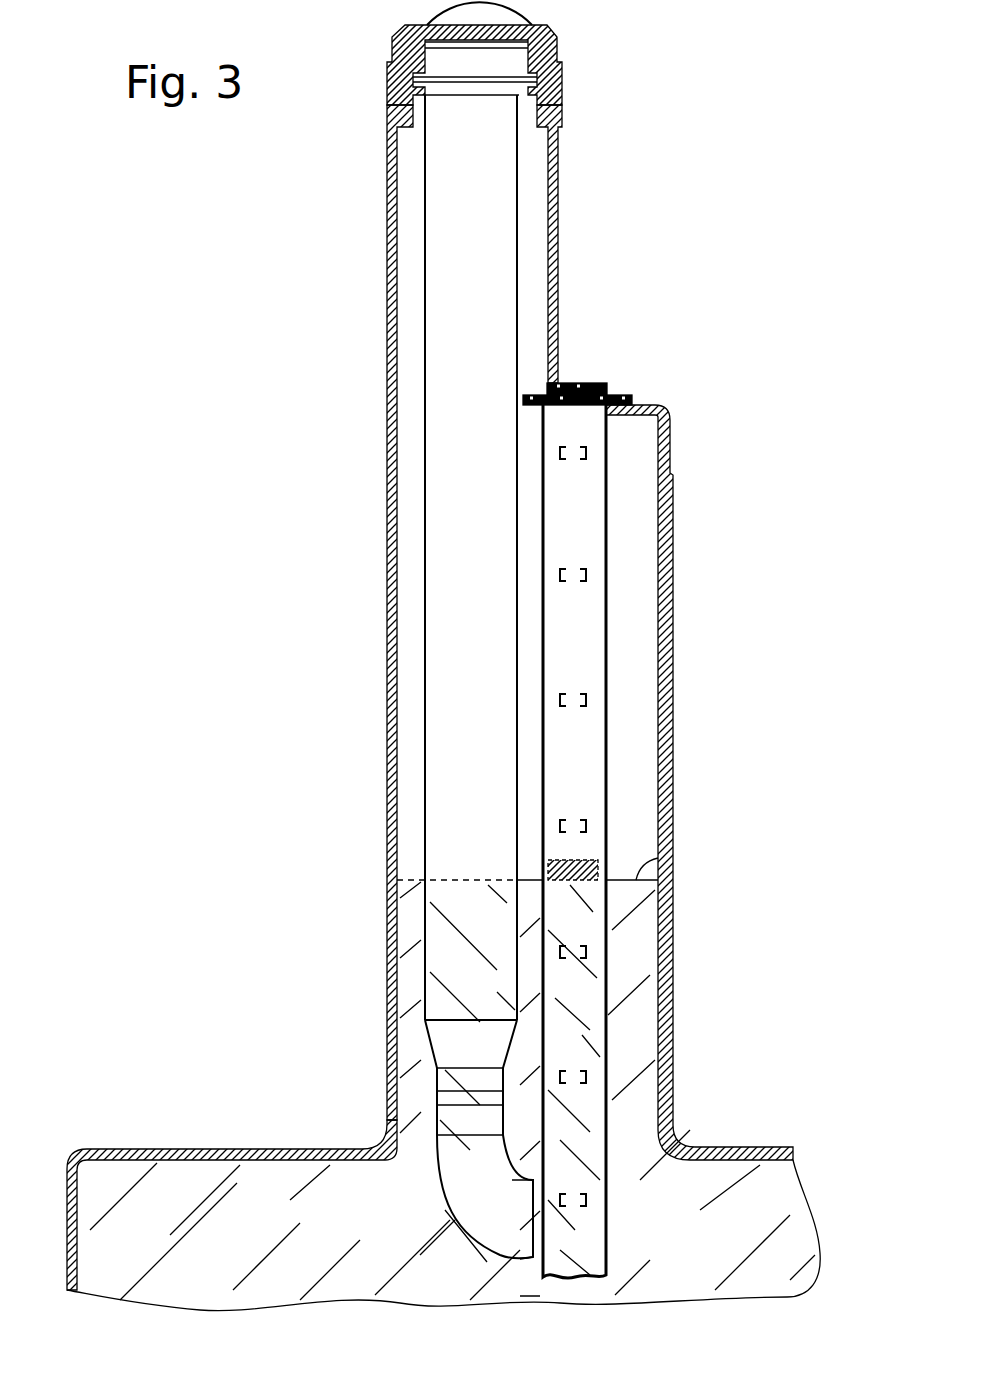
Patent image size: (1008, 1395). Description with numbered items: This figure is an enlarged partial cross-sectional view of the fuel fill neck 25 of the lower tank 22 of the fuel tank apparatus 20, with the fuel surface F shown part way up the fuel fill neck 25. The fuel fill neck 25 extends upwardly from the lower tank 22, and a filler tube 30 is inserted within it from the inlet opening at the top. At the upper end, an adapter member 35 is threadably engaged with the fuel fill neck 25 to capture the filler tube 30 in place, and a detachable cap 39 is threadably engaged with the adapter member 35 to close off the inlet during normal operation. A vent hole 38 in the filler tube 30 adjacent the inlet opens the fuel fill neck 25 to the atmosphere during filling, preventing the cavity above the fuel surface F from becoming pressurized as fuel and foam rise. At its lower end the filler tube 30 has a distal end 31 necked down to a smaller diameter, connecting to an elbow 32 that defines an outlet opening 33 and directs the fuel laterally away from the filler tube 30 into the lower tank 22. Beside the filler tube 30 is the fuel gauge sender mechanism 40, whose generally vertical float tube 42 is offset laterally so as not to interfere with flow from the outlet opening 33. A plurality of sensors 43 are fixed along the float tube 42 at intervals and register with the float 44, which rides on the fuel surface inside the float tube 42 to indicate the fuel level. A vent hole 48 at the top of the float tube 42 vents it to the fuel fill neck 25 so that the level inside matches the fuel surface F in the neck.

The fuel tank apparatus 20 is at (252, 815).
The lower tank 22 is at (740, 1148).
The fuel fill neck 25 is at (387, 357).
The filler tube 30 is at (425, 266).
The distal end 31 is at (427, 1082).
The elbow 32 is at (430, 1160).
The outlet opening 33 is at (507, 1273).
The adapter member 35 is at (560, 96).
The vent hole 38 is at (472, 143).
The detachable cap 39 is at (527, 23).
The fuel gauge sender mechanism 40 is at (648, 370).
The float tube 42 is at (607, 495).
The sensors 43 is at (587, 700).
The float 44 is at (578, 860).
The vent hole 48 is at (575, 430).
The fuel surface F is at (668, 850).